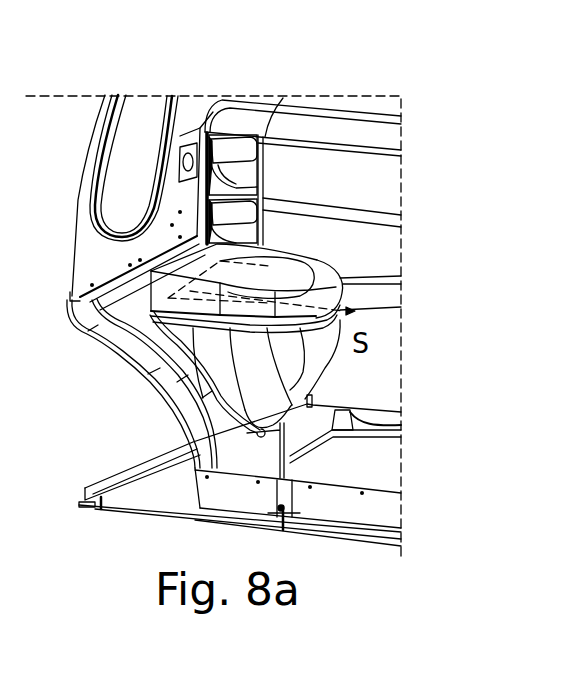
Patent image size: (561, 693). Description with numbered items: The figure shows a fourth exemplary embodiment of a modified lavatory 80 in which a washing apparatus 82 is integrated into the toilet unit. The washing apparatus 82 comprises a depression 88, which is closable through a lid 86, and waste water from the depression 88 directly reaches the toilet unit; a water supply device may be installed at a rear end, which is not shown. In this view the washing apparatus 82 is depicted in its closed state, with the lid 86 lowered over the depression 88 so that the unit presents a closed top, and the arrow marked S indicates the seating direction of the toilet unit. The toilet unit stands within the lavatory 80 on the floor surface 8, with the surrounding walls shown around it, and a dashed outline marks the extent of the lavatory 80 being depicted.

The lavatory module assembly 80 is at (401, 70).
The louvered storage compartment 88 is at (235, 266).
The toilet seat 86 is at (297, 264).
The side wall panel 82 is at (386, 311).
The floor pan base 8 is at (388, 467).